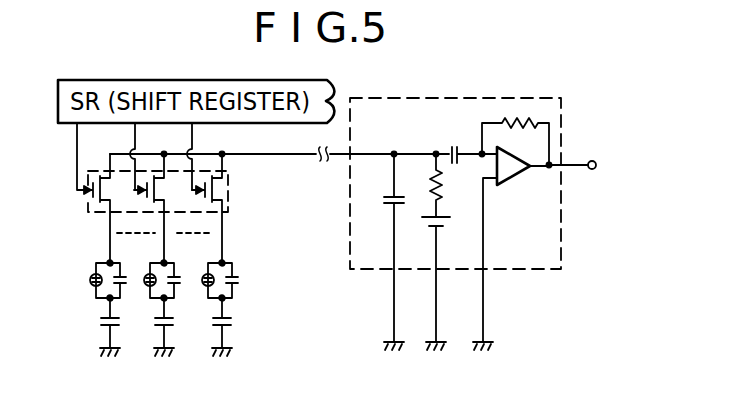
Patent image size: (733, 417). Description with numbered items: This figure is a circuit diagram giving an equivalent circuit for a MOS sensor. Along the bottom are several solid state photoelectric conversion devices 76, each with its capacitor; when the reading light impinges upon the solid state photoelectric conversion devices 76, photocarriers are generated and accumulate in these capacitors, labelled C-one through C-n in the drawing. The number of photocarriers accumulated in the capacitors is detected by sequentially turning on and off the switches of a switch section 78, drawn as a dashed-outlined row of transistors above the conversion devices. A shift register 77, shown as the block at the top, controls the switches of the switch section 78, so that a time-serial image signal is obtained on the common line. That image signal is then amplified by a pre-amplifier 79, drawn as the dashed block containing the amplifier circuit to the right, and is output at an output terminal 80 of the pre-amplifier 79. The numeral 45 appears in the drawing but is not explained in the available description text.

The shift register 77 is at (67, 124).
The switch section 78 is at (85, 201).
The solid state photoelectric conversion device 76 is at (88, 305).
The photodiodes 45 is at (148, 308).
The pre-amplifier 79 is at (515, 270).
The output terminal 80 is at (597, 165).